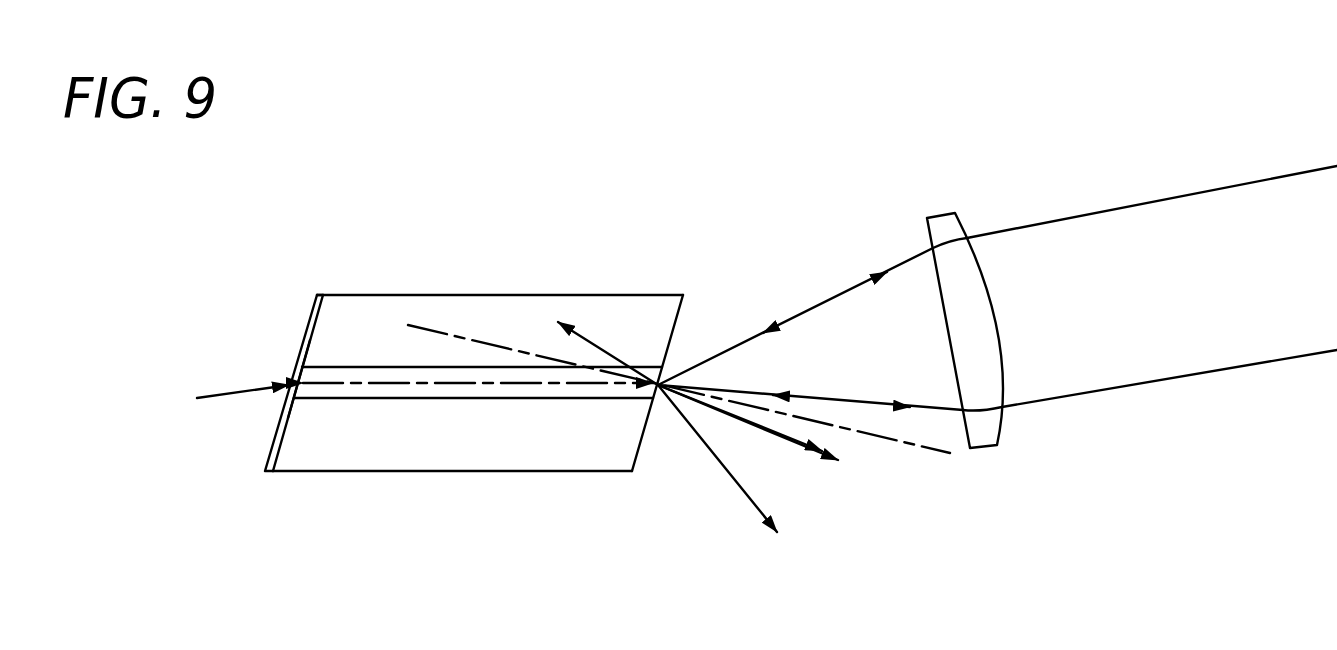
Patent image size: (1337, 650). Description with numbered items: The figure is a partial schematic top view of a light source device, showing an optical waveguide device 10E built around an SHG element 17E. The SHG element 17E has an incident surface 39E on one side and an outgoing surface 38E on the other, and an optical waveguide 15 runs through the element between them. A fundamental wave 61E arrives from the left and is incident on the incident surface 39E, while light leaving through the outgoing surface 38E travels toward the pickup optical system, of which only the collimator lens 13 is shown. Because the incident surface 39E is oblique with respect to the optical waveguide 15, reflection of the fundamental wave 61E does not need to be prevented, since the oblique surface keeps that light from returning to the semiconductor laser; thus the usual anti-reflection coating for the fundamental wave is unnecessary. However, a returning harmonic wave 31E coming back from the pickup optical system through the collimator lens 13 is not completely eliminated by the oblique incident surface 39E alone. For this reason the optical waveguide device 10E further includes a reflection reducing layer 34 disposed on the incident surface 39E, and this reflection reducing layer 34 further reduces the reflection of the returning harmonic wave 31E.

The optical waveguide device 10E is at (618, 285).
The returning harmonic wave 31E is at (365, 367).
The optical axis 15 is at (450, 386).
The fundamental wave 61E is at (222, 388).
The reflection reducing layer 34 is at (272, 437).
The incident surface 39E is at (288, 418).
The SHG element 17E is at (537, 477).
The outgoing surface 38E is at (643, 437).
The collimator lens 13 is at (988, 450).